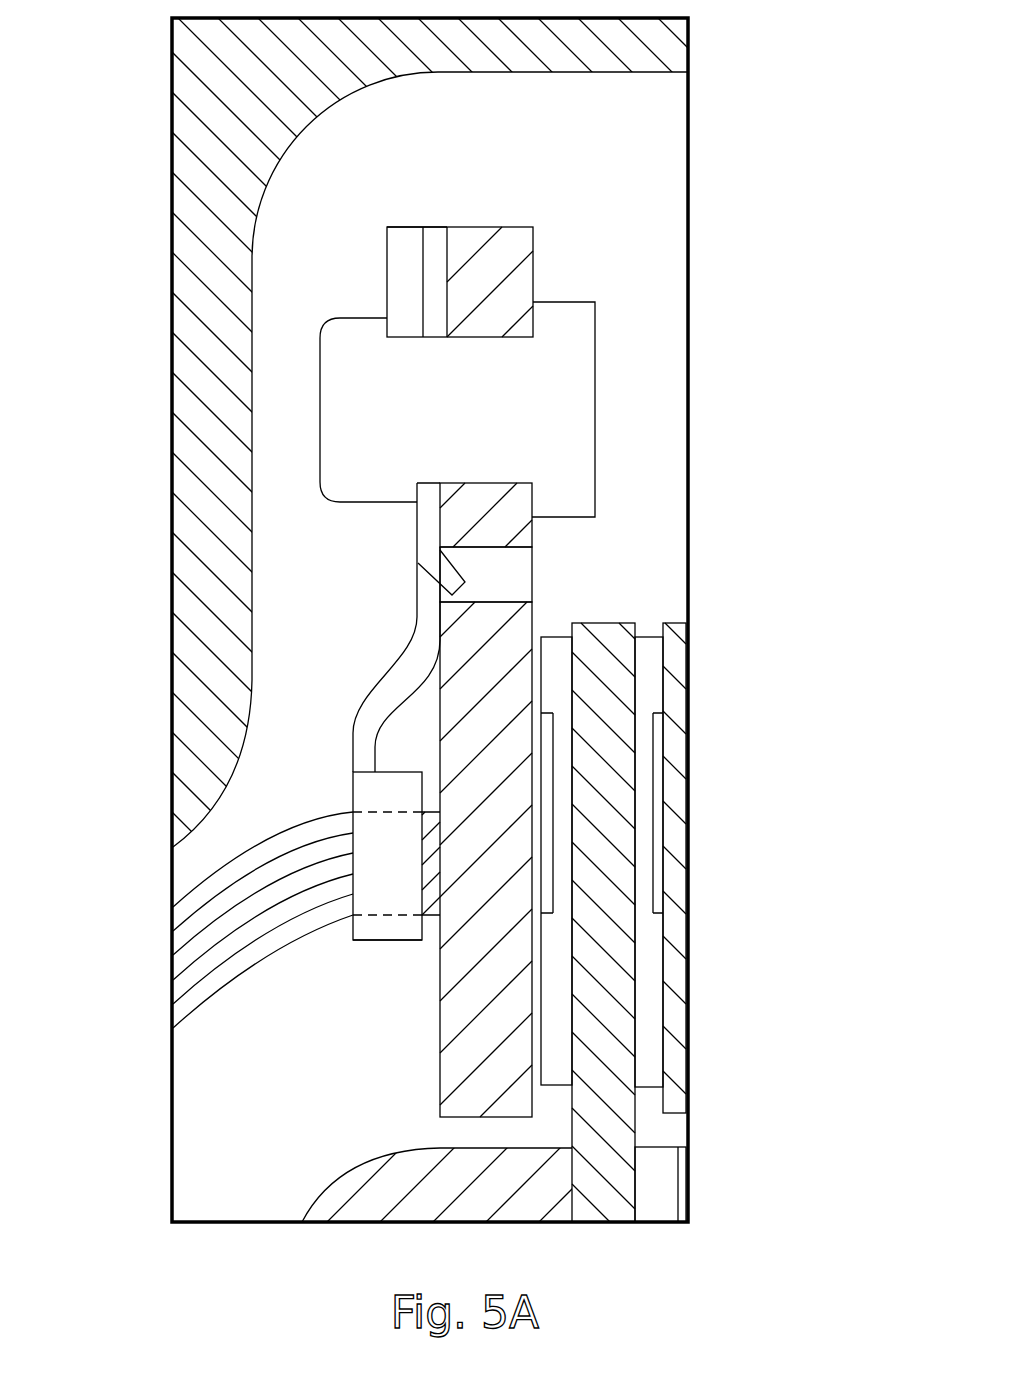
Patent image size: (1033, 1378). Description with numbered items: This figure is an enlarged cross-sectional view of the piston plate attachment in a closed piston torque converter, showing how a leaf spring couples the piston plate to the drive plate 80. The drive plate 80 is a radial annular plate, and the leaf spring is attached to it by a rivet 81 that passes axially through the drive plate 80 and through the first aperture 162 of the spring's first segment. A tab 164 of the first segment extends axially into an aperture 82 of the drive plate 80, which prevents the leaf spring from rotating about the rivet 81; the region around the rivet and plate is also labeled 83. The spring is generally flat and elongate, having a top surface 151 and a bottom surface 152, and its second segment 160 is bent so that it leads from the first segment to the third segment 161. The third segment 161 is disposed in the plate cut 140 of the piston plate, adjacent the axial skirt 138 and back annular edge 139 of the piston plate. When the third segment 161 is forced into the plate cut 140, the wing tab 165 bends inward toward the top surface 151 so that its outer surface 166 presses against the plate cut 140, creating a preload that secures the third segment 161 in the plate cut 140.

The drive plate 80 is at (487, 285).
The rivet 81 is at (592, 380).
The aperture 82 is at (513, 570).
The pin head 83 is at (412, 227).
The axial skirt 138 is at (278, 835).
The back annular edge 139 is at (443, 884).
The plate cut 140 is at (387, 847).
The top surface 151 is at (442, 267).
The bottom surface 152 is at (417, 287).
The second segment 160 is at (385, 672).
The third segment 161 is at (382, 747).
The first aperture 162 is at (363, 425).
The tab 164 is at (450, 583).
The wing tab 165 is at (393, 947).
The outer surface 166 is at (374, 930).